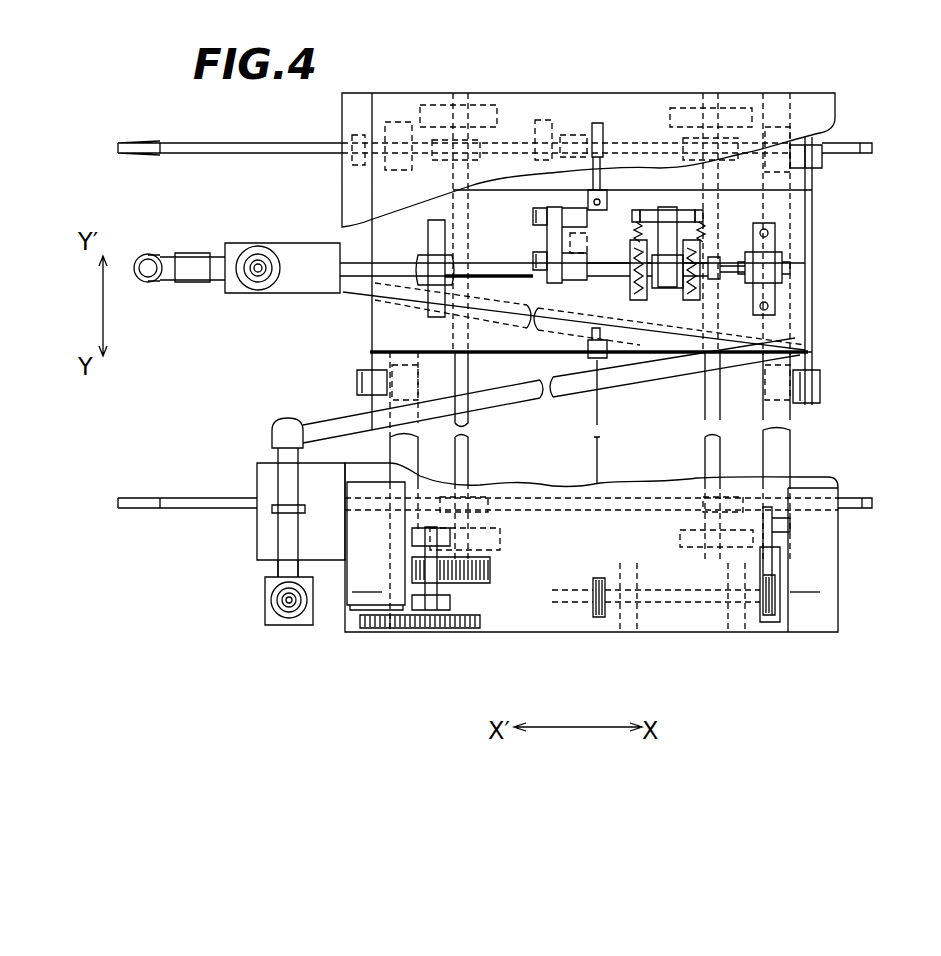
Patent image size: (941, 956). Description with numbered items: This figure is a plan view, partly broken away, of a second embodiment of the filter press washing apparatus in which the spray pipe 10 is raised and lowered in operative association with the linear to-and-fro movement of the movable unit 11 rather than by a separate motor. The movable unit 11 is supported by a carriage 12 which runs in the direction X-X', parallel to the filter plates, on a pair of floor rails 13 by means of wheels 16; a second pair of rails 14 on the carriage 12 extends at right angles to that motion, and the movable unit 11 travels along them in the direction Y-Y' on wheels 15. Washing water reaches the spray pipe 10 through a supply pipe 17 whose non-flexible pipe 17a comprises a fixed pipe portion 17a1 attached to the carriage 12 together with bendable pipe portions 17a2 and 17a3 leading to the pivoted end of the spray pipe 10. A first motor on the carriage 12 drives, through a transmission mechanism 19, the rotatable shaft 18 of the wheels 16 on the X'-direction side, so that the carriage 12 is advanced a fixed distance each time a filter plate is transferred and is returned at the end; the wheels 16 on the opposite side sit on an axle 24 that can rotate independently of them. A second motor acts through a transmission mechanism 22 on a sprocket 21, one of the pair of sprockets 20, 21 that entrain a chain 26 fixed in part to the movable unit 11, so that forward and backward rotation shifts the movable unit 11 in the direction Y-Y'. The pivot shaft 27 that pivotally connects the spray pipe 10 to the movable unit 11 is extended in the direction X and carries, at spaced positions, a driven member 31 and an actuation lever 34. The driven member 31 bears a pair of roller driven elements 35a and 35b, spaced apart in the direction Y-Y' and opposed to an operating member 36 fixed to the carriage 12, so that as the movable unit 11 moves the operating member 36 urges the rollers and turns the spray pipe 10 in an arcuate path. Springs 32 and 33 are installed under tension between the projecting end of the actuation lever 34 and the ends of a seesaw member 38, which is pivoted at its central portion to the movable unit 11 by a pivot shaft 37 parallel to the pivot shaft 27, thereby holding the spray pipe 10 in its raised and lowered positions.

The spray pipe 10 is at (262, 285).
The movable unit 11 is at (805, 300).
The carriage 12 is at (826, 106).
The rails 13 is at (210, 148).
The rails 14 is at (392, 447).
The wheels 15 is at (392, 140).
The wheels 16 is at (487, 130).
The supply pipe 17 is at (283, 610).
The non-flexible pipe 17a is at (290, 598).
The fixed pipe portion 17a1 is at (283, 532).
The bendable pipe portion 17a2 is at (340, 420).
The bendable pipe portion 17a3 is at (355, 302).
The rotatable shaft 18 is at (468, 460).
The transmission mechanism 19 is at (410, 560).
The sprocket 20 is at (605, 125).
The sprocket 21 is at (592, 596).
The transmission mechanism 22 is at (785, 577).
The axle 24 is at (705, 458).
The chain 26 is at (603, 452).
The pivot shaft 27 is at (480, 278).
The driven member 31 is at (548, 248).
The spring 32 is at (632, 310).
The spring 33 is at (636, 240).
The actuation lever 34 is at (700, 225).
The driven element 35a is at (560, 277).
The driven element 35b is at (560, 225).
The operating member 36 is at (605, 278).
The pivot shaft 37 is at (712, 282).
The seesaw member 38 is at (672, 304).